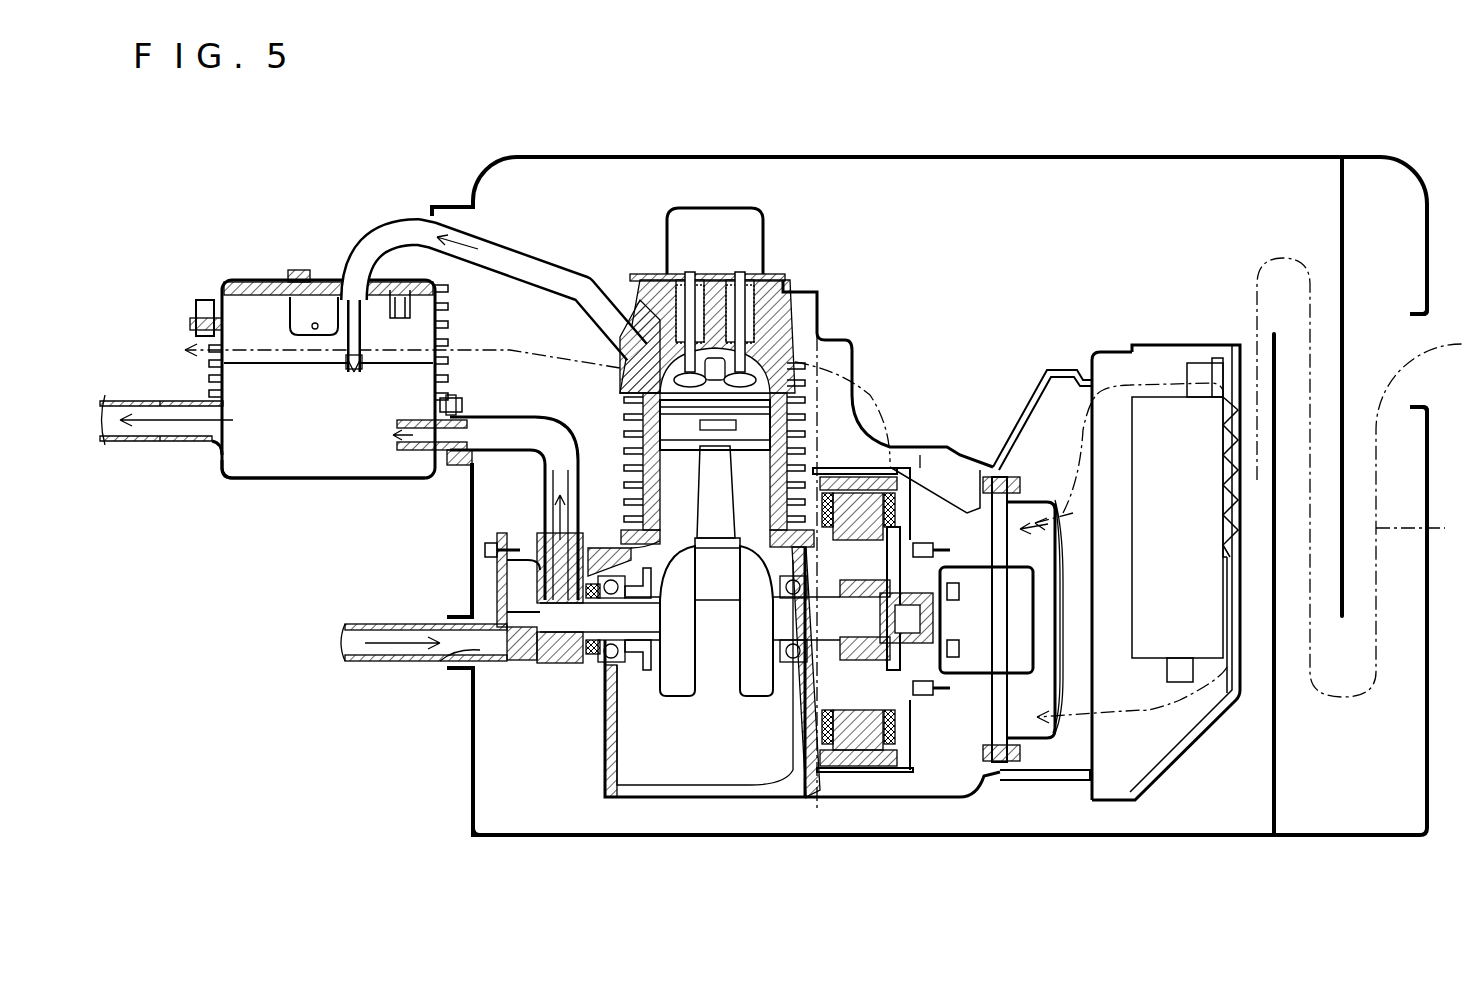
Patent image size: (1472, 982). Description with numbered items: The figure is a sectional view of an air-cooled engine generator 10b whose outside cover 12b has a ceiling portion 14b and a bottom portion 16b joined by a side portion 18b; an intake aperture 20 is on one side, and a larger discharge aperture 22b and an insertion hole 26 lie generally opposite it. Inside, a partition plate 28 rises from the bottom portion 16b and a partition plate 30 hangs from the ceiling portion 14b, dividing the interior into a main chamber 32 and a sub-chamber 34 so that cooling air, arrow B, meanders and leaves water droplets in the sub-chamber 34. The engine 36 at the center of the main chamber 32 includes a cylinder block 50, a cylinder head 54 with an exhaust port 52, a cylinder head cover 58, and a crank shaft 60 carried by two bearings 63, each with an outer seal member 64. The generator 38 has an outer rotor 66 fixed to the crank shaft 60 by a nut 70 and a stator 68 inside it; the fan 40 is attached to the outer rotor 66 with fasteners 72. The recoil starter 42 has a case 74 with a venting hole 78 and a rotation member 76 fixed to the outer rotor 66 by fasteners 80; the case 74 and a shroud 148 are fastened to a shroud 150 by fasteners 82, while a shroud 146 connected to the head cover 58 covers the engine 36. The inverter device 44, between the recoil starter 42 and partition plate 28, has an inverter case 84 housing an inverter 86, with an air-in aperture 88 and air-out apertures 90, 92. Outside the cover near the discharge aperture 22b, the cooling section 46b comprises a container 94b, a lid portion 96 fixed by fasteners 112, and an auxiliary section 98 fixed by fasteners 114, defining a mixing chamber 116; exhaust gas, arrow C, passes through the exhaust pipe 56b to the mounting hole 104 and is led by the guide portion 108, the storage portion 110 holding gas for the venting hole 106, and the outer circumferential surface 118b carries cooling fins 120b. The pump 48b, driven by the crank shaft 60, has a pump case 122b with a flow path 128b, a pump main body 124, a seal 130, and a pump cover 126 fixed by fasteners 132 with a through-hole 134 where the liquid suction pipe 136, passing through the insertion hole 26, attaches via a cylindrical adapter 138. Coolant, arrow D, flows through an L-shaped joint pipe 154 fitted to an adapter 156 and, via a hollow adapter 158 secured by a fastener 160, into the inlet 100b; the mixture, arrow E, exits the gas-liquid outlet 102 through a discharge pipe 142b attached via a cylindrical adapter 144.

The air-cooled engine generator 10b is at (418, 108).
The outside cover 12b is at (812, 150).
The ceiling portion 14b is at (746, 155).
The bottom portion 16b is at (730, 838).
The side portion 18b is at (1428, 605).
The intake aperture 20 is at (1412, 316).
The discharge aperture 22b is at (440, 205).
The insertion hole 26 is at (452, 668).
The partition plate 28 is at (1277, 750).
The partition plate 30 is at (1340, 207).
The main chamber 32 is at (545, 812).
The sub-chamber 34 is at (1347, 812).
The engine 36 is at (818, 412).
The generator 38 is at (882, 465).
The fan 40 is at (950, 462).
The recoil starter 42 is at (1049, 766).
The inverter device 44 is at (1158, 326).
The cooling section 46b is at (254, 258).
The pump 48b is at (484, 595).
The cylinder block 50 is at (604, 778).
The exhaust port 52 is at (628, 318).
The cylinder head 54 is at (820, 318).
The exhaust pipe 56b is at (560, 263).
The cylinder head cover 58 is at (764, 216).
The crank shaft 60 is at (684, 700).
The bearings 63 is at (614, 664).
The seal member 64 is at (584, 658).
The outer rotor 66 is at (843, 476).
The stator 68 is at (858, 525).
The nut 70 is at (930, 621).
The fasteners 72 is at (936, 551).
The case 74 is at (1010, 495).
The rotation member 76 is at (1020, 562).
The venting hole 78 is at (1062, 573).
The fasteners 80 is at (960, 591).
The fasteners 82 is at (1018, 476).
The inverter case 84 is at (1190, 360).
The inverter 86 is at (1132, 537).
The air-in aperture 88 is at (1240, 548).
The air-out aperture 90 is at (1090, 398).
The air-out aperture 92 is at (1092, 725).
The container 94b is at (277, 492).
The lid portion 96 is at (227, 266).
The auxiliary section 98 is at (279, 333).
The inlet 100b is at (397, 447).
The gas-liquid outlet 102 is at (226, 436).
The mounting hole 104 is at (347, 262).
The venting hole 106 is at (303, 270).
The guide portion 108 is at (345, 368).
The storage portion 110 is at (300, 307).
The fasteners 112 is at (205, 302).
The fasteners 114 is at (401, 314).
The mixing chamber 116 is at (303, 400).
The outer circumferential surface 118b is at (212, 387).
The cooling fins 120b is at (212, 366).
The pump case 122b is at (560, 668).
The pump main body 124 is at (540, 664).
The pump cover 126 is at (505, 612).
The flow path 128b is at (506, 572).
The seal 130 is at (578, 665).
The fasteners 132 is at (484, 552).
The through-hole 134 is at (497, 662).
The liquid suction pipe 136 is at (370, 664).
The cylindrical adapter 138 is at (440, 660).
The discharge pipe 142b is at (123, 445).
The cylindrical adapter 144 is at (205, 443).
The shroud 146 is at (790, 290).
The shroud 148 is at (856, 358).
The shroud 150 is at (1015, 425).
The joint pipe 154 is at (553, 498).
The cylindrical adapter 156 is at (553, 519).
The hollow adapter 158 is at (450, 467).
The fastener 160 is at (462, 405).
The arrow showing cooling air flow B is at (512, 326).
The arrow showing exhaust gas flow C is at (490, 256).
The arrow showing coolant flow D is at (552, 438).
The arrow showing mixture flow E is at (158, 425).